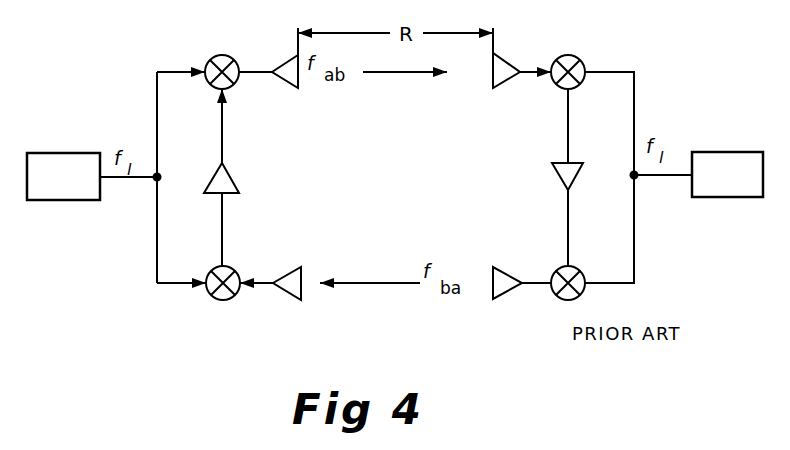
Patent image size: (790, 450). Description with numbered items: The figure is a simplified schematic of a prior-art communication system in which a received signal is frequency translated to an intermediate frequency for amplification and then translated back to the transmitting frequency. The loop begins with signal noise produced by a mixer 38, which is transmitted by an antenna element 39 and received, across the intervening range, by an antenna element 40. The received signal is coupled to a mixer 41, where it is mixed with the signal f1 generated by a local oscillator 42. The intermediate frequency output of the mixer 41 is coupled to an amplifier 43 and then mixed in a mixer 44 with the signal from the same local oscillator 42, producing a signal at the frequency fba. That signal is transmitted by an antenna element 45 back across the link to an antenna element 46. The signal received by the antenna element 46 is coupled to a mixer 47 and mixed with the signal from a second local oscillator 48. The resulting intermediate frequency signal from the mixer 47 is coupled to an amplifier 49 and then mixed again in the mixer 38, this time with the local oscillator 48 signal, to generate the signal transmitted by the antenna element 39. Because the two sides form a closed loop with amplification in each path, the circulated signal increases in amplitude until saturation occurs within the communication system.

The mixer 38 is at (230, 57).
The antenna element 39 is at (298, 90).
The antenna element 40 is at (505, 57).
The mixer 41 is at (578, 57).
The local oscillator 42 is at (748, 127).
The amplifier 43 is at (552, 177).
The mixer 44 is at (580, 295).
The antenna element 45 is at (510, 267).
The antenna element 46 is at (285, 300).
The mixer 47 is at (218, 301).
The local oscillator 48 is at (78, 128).
The amplifier 49 is at (228, 181).